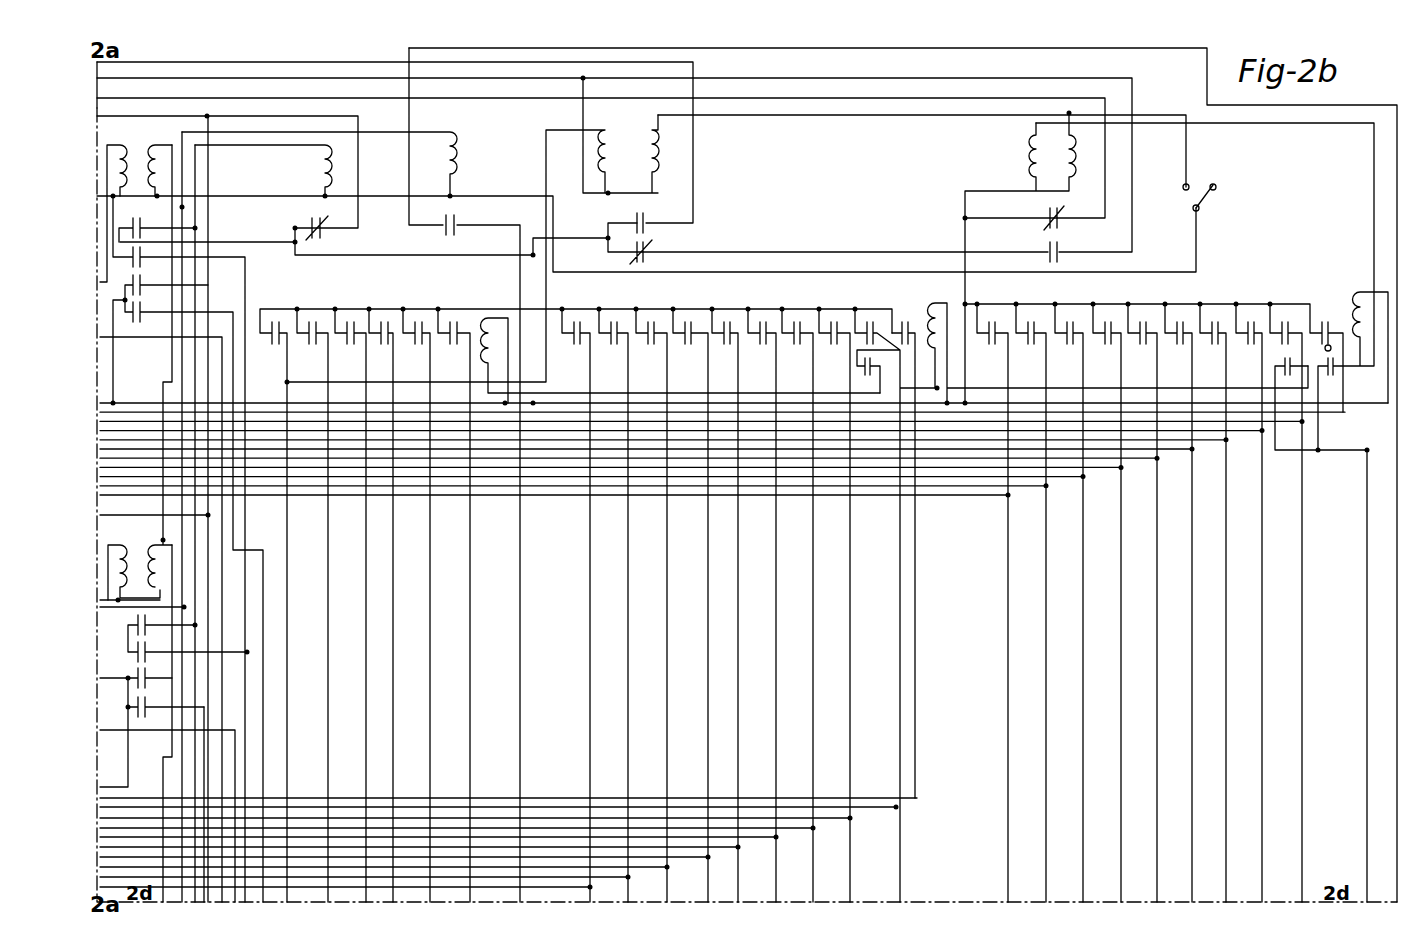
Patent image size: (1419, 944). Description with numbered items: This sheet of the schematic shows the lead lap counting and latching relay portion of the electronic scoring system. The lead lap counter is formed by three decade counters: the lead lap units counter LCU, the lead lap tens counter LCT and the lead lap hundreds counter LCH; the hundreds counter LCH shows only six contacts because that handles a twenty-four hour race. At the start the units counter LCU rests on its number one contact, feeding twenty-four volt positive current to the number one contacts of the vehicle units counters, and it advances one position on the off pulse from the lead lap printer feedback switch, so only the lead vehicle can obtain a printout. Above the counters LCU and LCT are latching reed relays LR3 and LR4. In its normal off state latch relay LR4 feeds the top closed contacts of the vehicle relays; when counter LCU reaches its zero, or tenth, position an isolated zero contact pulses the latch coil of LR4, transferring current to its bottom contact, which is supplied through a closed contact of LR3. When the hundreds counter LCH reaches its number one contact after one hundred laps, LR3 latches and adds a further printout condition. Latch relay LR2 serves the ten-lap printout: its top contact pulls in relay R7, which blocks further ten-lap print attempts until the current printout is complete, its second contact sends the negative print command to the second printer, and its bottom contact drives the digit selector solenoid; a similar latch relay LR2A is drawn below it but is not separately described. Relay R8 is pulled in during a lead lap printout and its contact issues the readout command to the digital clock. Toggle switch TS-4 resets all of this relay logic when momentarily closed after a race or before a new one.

The latch relay LR2 is at (136, 203).
The reed relay R7 is at (271, 170).
The relay R8 is at (328, 164).
The latching reed relay LR3 is at (473, 230).
The latching reed relay LR4 is at (1020, 258).
The transformer LR2A is at (140, 561).
The toggle switch TS-4 is at (1222, 197).
The lead lap hundreds counter LCH is at (576, 593).
The lead lap tens counter LCT is at (935, 592).
The lead lap units counter LCU is at (1176, 512).